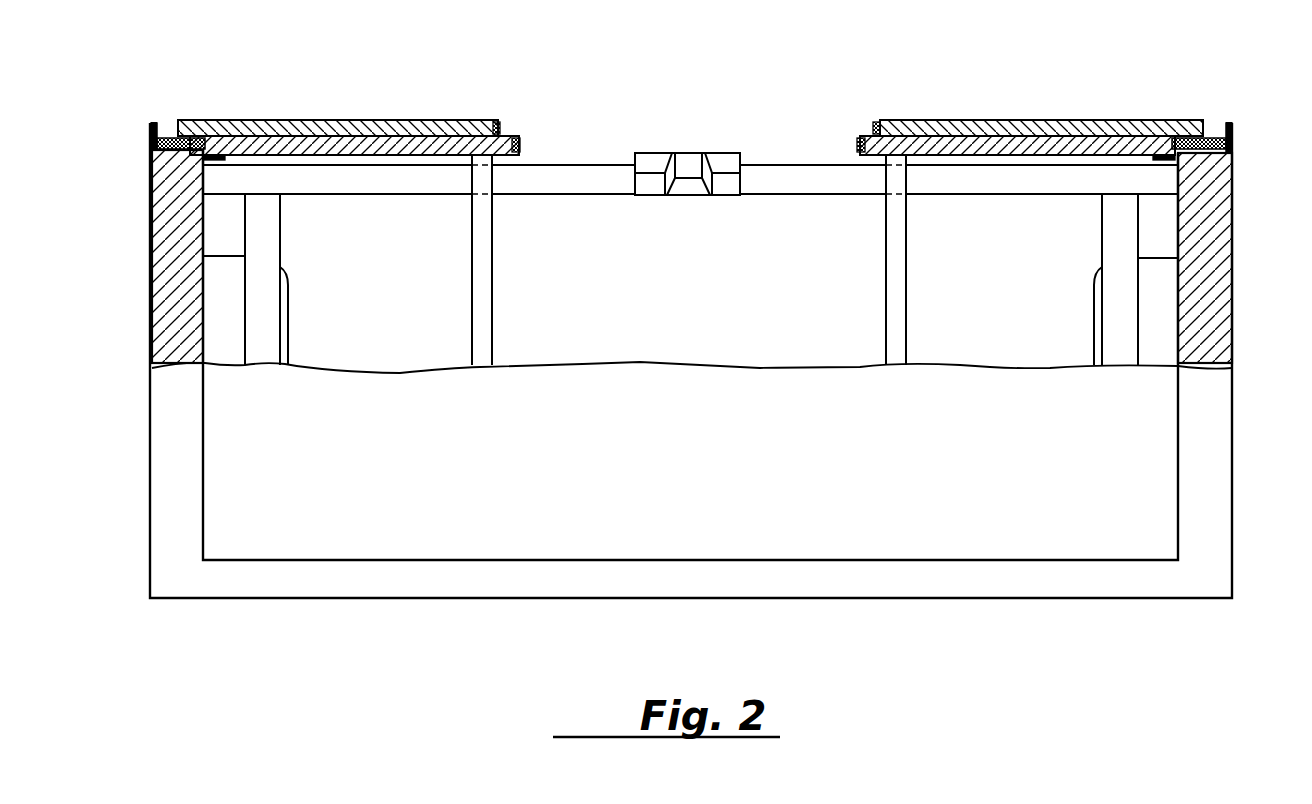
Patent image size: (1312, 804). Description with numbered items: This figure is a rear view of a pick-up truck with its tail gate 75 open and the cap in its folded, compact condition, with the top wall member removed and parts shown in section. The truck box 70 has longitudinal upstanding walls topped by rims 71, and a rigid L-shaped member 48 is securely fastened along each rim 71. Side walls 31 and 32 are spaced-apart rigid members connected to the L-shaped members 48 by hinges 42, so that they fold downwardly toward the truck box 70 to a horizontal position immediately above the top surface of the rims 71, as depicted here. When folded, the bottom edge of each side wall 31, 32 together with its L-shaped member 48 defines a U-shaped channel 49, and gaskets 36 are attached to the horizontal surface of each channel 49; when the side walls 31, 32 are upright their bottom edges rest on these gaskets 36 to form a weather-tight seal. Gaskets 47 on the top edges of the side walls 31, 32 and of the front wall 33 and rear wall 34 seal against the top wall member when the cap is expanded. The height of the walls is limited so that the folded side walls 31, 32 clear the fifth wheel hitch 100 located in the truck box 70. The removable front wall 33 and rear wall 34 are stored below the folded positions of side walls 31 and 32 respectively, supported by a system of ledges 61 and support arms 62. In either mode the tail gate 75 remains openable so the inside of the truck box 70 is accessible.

The side wall 31 is at (318, 120).
The side wall 32 is at (1017, 122).
The front wall 33 is at (425, 156).
The rear wall 34 is at (1035, 157).
The gasket 36 is at (172, 138).
The hinge 42 is at (180, 138).
The gasket 47 is at (497, 124).
The L-shaped member 48 is at (157, 140).
The U-shaped channel 49 is at (158, 127).
The ledge 61 is at (216, 162).
The support arm 62 is at (486, 306).
The truck box 70 is at (165, 270).
The rim 71 is at (182, 156).
The tail gate 75 is at (500, 506).
The fifth wheel hitch 100 is at (668, 160).